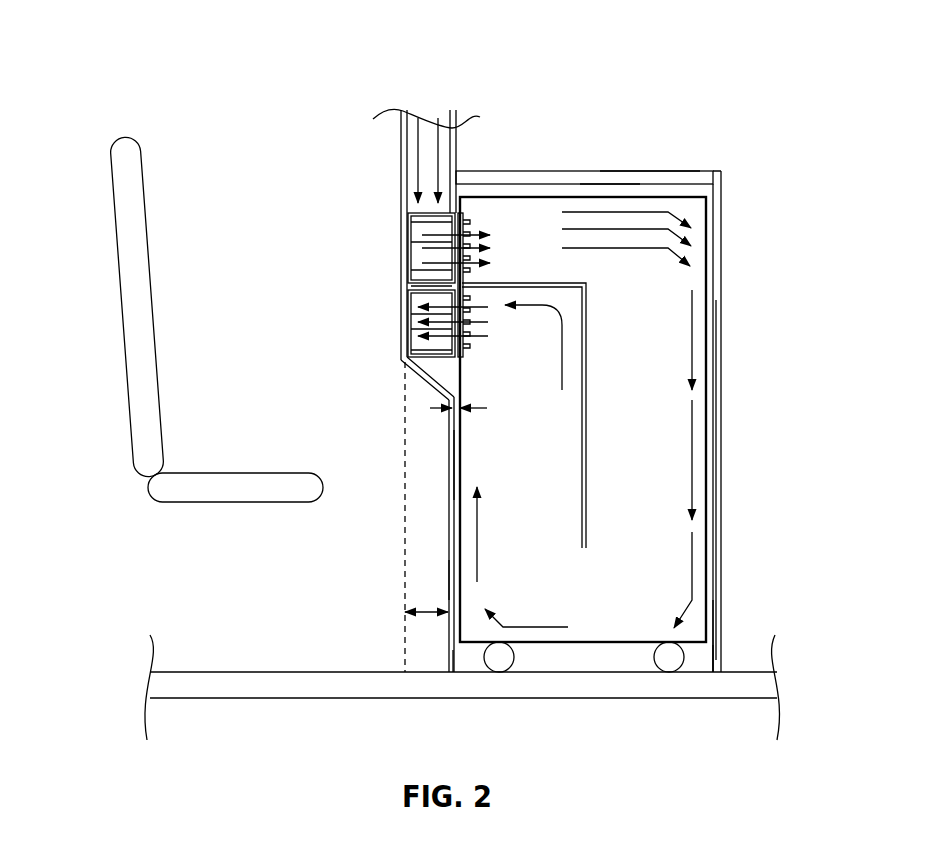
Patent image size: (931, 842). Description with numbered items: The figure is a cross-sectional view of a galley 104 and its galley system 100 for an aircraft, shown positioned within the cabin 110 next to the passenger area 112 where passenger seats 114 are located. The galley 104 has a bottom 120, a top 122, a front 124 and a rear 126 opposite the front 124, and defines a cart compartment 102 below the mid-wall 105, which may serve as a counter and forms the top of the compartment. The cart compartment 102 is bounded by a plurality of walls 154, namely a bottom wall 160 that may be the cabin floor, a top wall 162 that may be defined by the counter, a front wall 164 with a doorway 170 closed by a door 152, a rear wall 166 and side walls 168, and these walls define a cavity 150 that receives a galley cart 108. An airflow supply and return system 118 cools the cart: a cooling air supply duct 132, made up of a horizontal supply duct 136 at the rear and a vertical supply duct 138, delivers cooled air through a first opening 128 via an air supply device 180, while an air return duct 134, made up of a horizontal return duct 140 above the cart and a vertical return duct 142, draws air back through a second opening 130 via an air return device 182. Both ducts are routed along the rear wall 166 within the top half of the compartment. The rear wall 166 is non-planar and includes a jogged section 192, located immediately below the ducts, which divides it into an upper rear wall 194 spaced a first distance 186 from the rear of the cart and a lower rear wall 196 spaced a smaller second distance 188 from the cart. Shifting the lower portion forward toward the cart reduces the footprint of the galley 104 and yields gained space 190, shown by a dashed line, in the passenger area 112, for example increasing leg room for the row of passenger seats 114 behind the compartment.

The galley system 100 is at (706, 72).
The cart compartment 102 is at (724, 165).
The galley 104 is at (401, 174).
The mid-wall 105 is at (636, 170).
The galley cart 108 is at (718, 618).
The cabin 110 is at (226, 112).
The passenger area 112 is at (188, 594).
The passenger seats 114 is at (135, 197).
The airflow supply and return system 118 is at (430, 120).
The bottom 120 is at (572, 690).
The top plate 122 is at (562, 170).
The front 124 is at (721, 319).
The rear 126 is at (388, 575).
The first opening 128 is at (413, 270).
The second opening 130 is at (415, 330).
The cooling air supply duct 132 is at (424, 225).
The air return duct 134 is at (410, 360).
The horizontal supply duct 136 is at (413, 246).
The vertical supply duct 138 is at (458, 150).
The horizontal return duct 140 is at (418, 346).
The vertical return duct 142 is at (423, 286).
The cavity 150 is at (615, 657).
The door 152 is at (721, 487).
The walls 154 is at (458, 656).
The bottom wall 160 is at (536, 668).
The top wall 162 is at (594, 184).
The front wall 164 is at (700, 557).
The rear wall 166 is at (462, 446).
The side walls 168 is at (678, 192).
The doorway 170 is at (716, 656).
The air supply device 180 is at (478, 302).
The air return device 182 is at (472, 225).
The first distance 186 is at (425, 378).
The second distance 188 is at (432, 410).
The gained space 190 is at (376, 603).
The jogged section 192 is at (405, 403).
The upper rear wall 194 is at (406, 212).
The lower rear wall 196 is at (448, 495).